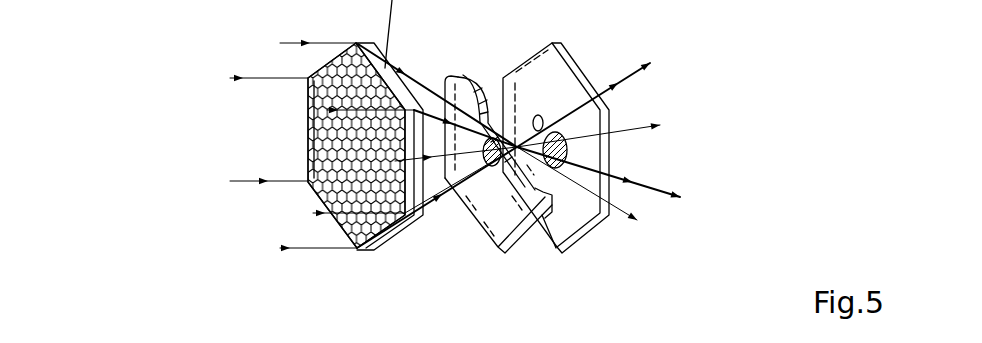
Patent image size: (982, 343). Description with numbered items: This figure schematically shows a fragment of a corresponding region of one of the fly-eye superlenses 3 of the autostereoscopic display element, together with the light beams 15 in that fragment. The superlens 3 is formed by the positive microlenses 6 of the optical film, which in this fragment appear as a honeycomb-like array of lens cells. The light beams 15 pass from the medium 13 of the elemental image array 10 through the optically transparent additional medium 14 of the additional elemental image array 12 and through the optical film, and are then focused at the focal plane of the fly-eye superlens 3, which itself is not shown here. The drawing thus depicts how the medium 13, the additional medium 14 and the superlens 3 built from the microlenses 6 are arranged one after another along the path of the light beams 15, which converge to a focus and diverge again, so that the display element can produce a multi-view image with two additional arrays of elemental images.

The superlens 3 is at (403, 232).
The positive microlens 6 is at (313, 197).
The elemental image array 10 is at (541, 116).
The additional elemental image array 12 is at (461, 77).
The medium 13 is at (557, 240).
The optically transparent additional medium 14 is at (360, 250).
The light beams 15 is at (337, 43).